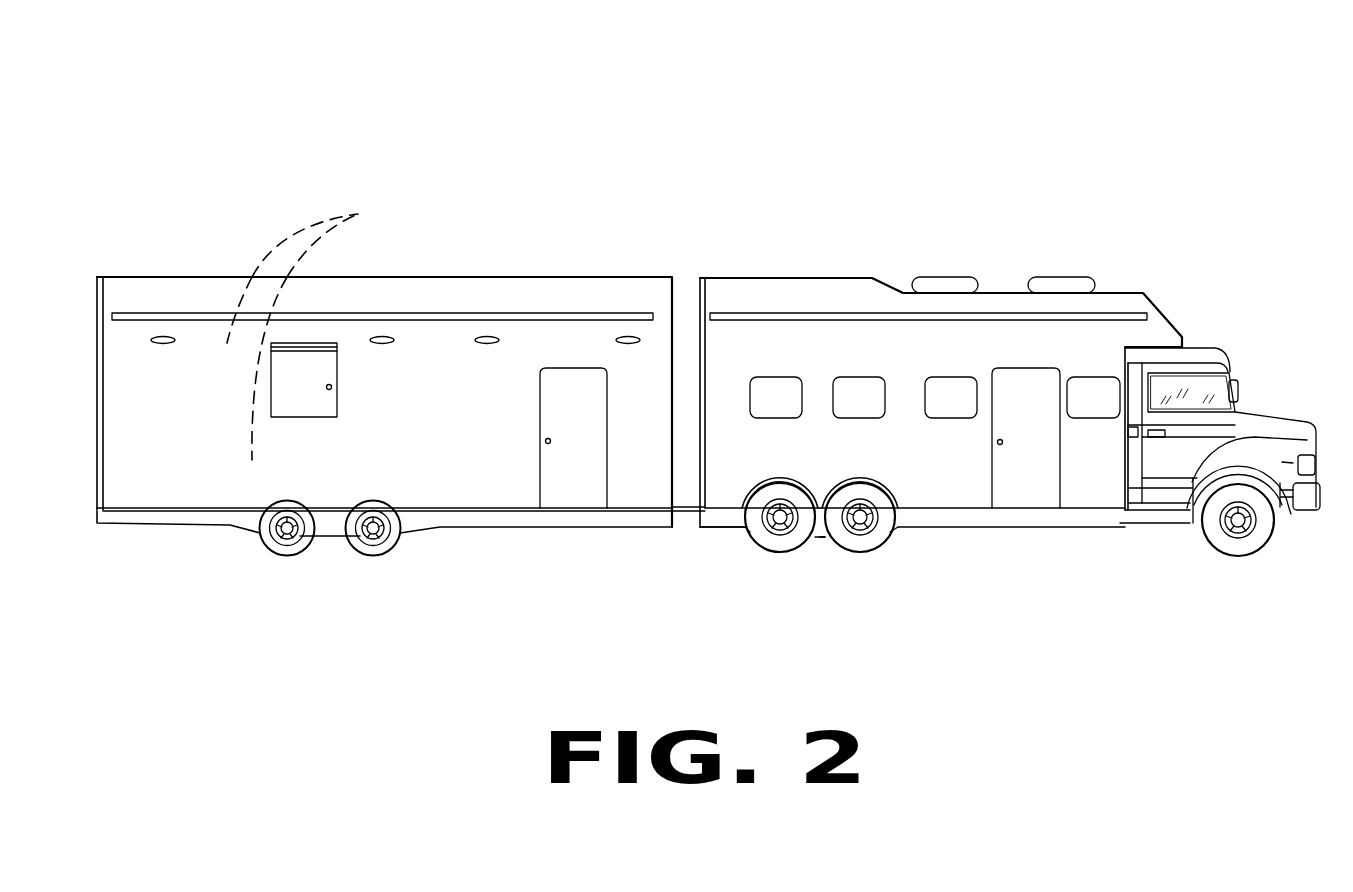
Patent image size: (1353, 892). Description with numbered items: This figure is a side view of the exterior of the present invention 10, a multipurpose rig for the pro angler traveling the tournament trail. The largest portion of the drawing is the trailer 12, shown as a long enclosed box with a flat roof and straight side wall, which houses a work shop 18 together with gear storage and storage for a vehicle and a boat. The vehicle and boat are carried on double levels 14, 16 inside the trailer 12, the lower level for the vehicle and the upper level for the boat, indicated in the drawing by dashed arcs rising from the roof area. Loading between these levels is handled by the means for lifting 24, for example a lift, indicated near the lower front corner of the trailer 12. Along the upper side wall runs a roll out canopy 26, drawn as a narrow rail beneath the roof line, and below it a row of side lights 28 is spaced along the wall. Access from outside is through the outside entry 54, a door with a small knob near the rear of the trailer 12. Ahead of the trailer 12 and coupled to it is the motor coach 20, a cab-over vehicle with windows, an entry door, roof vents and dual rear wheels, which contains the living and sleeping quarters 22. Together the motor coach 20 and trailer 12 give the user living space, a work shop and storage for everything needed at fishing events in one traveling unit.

The present invention 10 is at (232, 189).
The trailer 12 is at (638, 295).
The double level 14 is at (352, 222).
The double level 16 is at (358, 214).
The work shop 18 is at (512, 503).
The motor coach 20 is at (1163, 317).
The living and sleeping quarters 22 is at (917, 340).
The means for lifting 24 is at (97, 520).
The roll out canopy 26 is at (176, 312).
The side lights 28 is at (483, 335).
The outside entry 54 is at (573, 492).